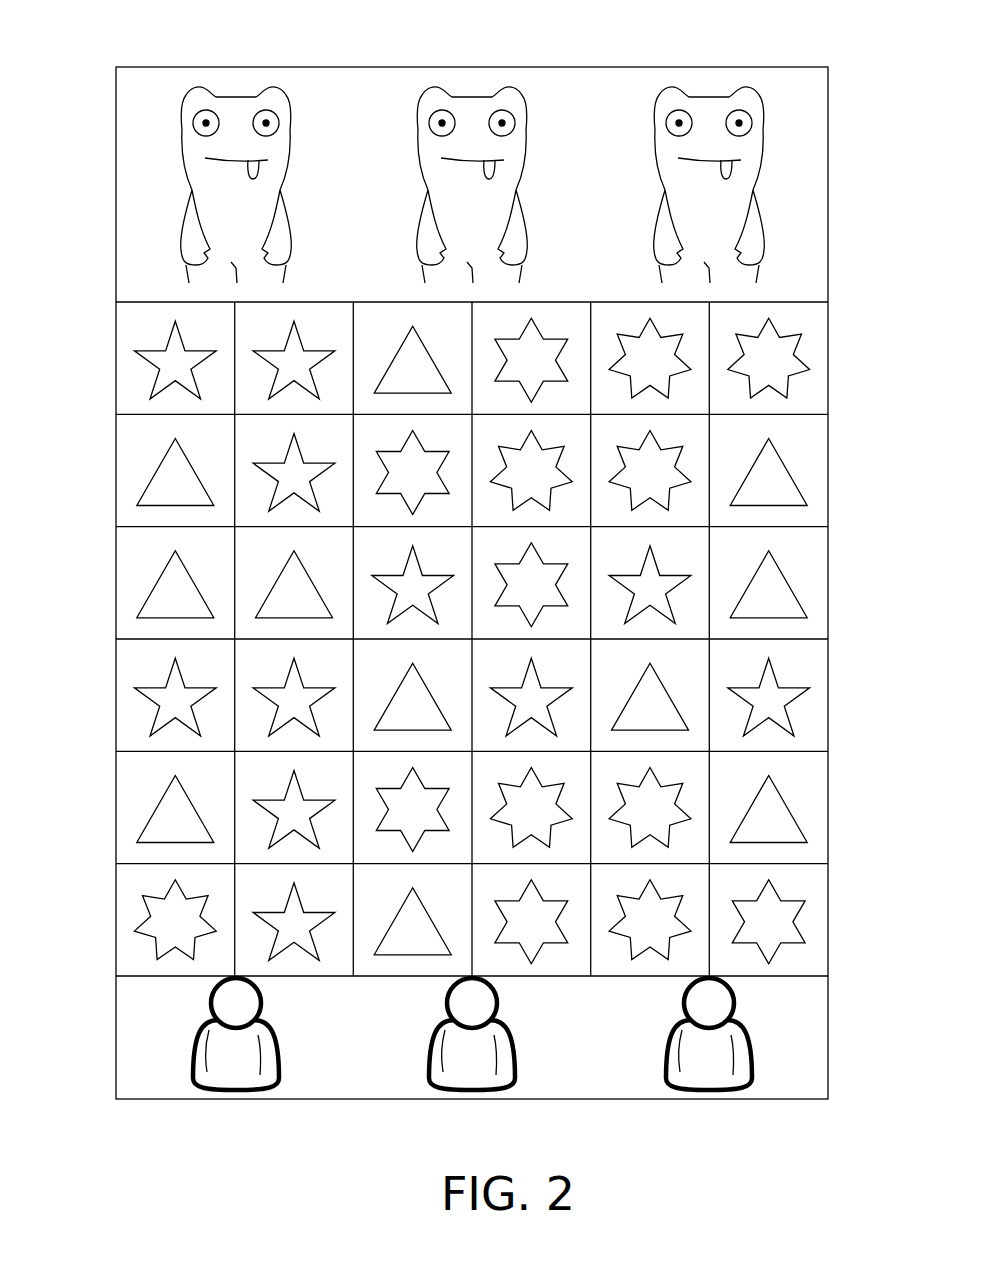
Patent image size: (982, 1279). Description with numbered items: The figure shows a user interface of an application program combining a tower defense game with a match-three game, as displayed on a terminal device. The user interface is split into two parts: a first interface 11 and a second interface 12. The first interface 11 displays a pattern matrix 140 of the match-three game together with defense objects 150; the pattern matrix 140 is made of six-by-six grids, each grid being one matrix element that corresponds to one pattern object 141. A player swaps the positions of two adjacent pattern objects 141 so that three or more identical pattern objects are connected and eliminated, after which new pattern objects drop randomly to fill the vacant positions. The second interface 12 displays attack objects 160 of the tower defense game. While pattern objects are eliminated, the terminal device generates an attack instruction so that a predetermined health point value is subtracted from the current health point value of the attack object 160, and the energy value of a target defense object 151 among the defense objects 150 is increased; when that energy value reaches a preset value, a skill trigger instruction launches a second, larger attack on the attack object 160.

The first interface 11 is at (828, 918).
The second interface 12 is at (496, 157).
The pattern matrix 140 is at (465, 639).
The pattern object 141 is at (167, 595).
The defense object 150 is at (193, 1043).
The target defense object 151 is at (749, 1054).
The attack object 160 is at (180, 118).